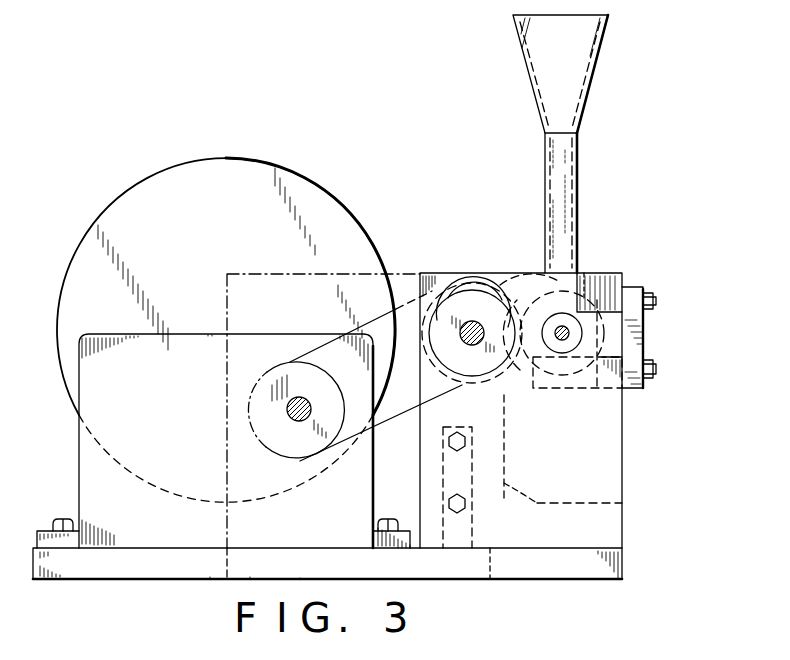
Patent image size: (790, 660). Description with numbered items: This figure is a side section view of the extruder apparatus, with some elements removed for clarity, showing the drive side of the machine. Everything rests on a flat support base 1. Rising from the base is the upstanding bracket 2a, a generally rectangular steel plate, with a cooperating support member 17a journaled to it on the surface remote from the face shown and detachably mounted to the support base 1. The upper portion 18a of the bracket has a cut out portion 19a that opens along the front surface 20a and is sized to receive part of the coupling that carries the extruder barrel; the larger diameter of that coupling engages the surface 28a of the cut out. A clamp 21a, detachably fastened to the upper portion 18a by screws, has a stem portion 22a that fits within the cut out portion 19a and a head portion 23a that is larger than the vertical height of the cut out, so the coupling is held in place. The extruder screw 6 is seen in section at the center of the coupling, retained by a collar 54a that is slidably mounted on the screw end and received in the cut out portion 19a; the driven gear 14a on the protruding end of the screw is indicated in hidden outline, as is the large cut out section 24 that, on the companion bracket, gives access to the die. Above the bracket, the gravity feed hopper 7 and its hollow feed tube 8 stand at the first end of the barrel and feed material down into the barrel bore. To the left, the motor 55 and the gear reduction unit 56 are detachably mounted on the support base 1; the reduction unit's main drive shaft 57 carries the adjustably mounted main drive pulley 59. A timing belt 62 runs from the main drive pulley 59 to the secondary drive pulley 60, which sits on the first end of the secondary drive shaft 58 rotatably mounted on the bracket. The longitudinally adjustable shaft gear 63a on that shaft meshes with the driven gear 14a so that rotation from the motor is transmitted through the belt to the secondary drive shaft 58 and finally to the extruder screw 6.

The support base 1 is at (142, 570).
The upstanding bracket 2a is at (610, 517).
The extruder screw 6 is at (561, 347).
The gravity feed hopper 7 is at (536, 49).
The hollow feed tube 8 is at (556, 176).
The driven gear 14a is at (511, 400).
The support member 17a is at (472, 470).
The upper portion 18a is at (514, 296).
The cut out portion 19a is at (609, 273).
The front surface 20a is at (632, 276).
The clamp 21a is at (649, 332).
The stem portion 22a is at (597, 345).
The head portion 23a is at (648, 285).
The large cut out section 24 is at (515, 498).
The surface 28a is at (585, 273).
The collar 54a is at (545, 345).
The motor 55 is at (135, 198).
The gear reduction unit 56 is at (82, 471).
The main drive shaft 57 is at (296, 399).
The secondary drive shaft 58 is at (468, 348).
The main drive pulley 59 is at (292, 446).
The secondary drive pulley 60 is at (454, 300).
The timing belt 62 is at (404, 420).
The shaft gear 63a is at (477, 290).